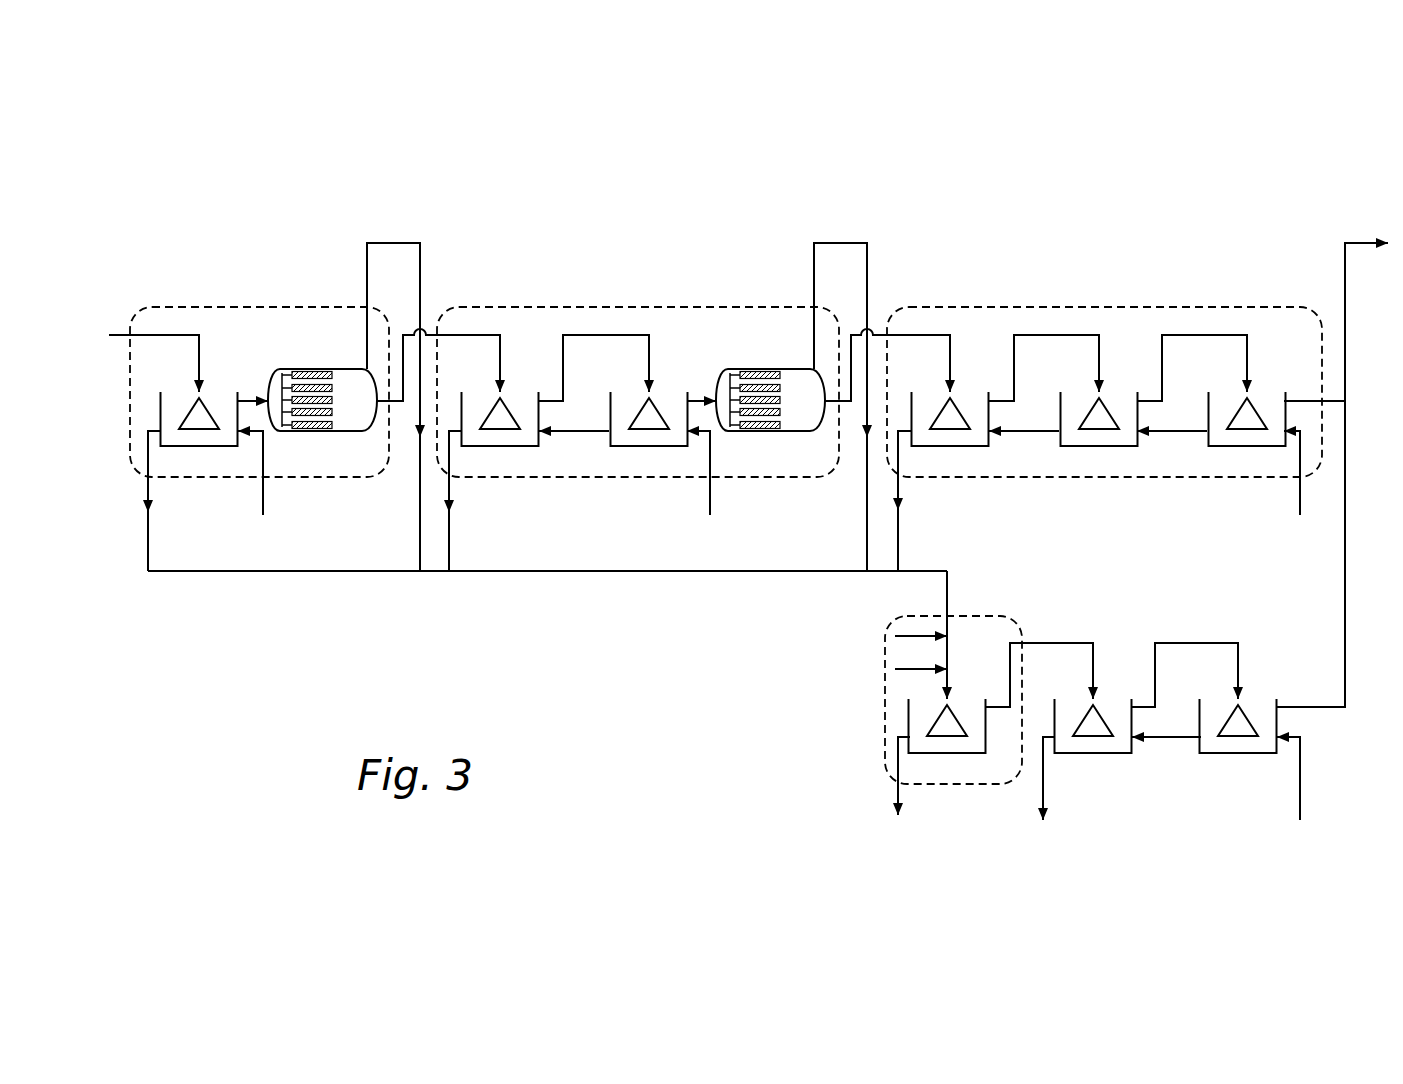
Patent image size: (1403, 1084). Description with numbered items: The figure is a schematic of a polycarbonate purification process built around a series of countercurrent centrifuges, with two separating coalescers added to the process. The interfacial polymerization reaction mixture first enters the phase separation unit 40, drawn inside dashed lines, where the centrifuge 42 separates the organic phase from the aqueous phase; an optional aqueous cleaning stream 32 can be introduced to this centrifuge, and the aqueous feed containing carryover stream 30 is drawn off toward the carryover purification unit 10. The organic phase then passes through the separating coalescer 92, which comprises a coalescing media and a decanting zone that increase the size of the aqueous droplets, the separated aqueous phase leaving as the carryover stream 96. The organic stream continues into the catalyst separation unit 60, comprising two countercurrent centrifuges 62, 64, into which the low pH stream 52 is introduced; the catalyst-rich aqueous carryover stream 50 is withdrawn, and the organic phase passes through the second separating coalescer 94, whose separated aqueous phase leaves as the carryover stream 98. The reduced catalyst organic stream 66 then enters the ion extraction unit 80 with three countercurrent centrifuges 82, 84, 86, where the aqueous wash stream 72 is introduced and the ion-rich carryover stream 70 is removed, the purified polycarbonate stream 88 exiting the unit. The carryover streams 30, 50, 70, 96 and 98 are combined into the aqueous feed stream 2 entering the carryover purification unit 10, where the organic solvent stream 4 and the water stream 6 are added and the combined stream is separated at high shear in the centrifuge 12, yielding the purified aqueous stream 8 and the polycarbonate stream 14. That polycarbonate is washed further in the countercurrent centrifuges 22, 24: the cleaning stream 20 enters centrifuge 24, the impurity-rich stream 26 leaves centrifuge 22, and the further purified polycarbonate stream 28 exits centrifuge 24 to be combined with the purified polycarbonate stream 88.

The aqueous feed stream 2 is at (950, 642).
The organic solvent stream 4 is at (913, 634).
The water stream 6 is at (912, 670).
The purified aqueous stream 8 is at (898, 793).
The carryover purification unit 10 is at (975, 615).
The centrifuge 12 is at (948, 753).
The polycarbonate stream 14 is at (1063, 642).
The cleaning stream 20 is at (1300, 795).
The centrifuge 22 is at (1093, 753).
The centrifuge 24 is at (1240, 753).
The impurity-rich stream 26 is at (1043, 782).
The further purified polycarbonate stream 28 is at (1345, 612).
The carryover stream 30 is at (148, 551).
The aqueous cleaning stream 32 is at (263, 497).
The phase separation unit 40 is at (218, 306).
The centrifuge 42 is at (200, 446).
The carryover stream 50 is at (449, 551).
The low pH stream 52 is at (710, 500).
The catalyst separation unit 60 is at (582, 306).
The centrifuge 62 is at (500, 446).
The centrifuge 64 is at (650, 446).
The reduced catalyst organic stream 66 is at (950, 362).
The carryover stream 70 is at (898, 546).
The aqueous wash stream 72 is at (1300, 497).
The ion extraction unit 80 is at (1098, 306).
The centrifuge 82 is at (950, 446).
The centrifuge 84 is at (1099, 446).
The centrifuge 86 is at (1247, 446).
The purified polycarbonate stream 88 is at (1300, 401).
The separating coalescer 92 is at (310, 431).
The separating coalescer 94 is at (760, 431).
The carryover stream 96 is at (393, 243).
The carryover stream 98 is at (843, 243).